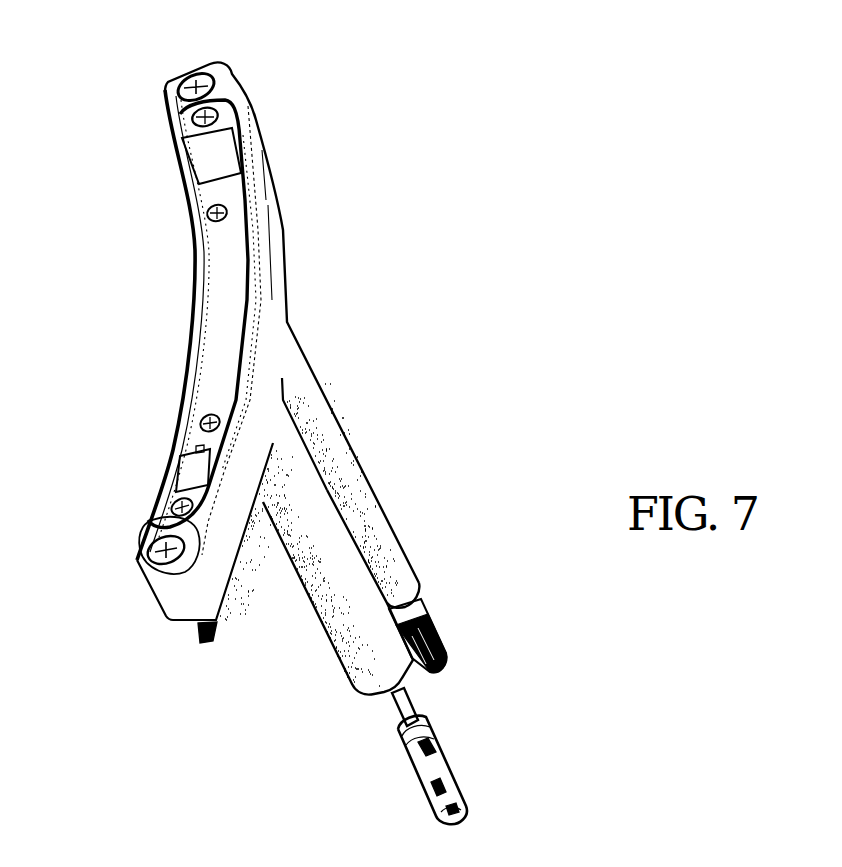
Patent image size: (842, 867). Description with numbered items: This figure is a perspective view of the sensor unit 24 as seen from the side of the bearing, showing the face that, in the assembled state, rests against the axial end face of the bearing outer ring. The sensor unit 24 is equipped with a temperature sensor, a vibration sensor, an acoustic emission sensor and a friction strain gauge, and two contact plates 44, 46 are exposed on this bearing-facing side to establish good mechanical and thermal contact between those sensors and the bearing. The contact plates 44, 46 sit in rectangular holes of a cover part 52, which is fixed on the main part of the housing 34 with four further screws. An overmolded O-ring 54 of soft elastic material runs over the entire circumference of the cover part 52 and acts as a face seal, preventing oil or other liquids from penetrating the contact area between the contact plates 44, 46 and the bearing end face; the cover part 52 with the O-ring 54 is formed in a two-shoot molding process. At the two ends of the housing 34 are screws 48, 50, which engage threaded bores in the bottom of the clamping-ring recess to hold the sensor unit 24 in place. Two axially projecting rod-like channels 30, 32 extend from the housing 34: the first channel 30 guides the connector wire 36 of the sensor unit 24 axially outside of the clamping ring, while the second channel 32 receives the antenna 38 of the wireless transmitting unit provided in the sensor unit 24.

The sensor unit 24 is at (270, 282).
The first channel 30 is at (313, 527).
The second channel 32 is at (332, 413).
The housing 34 is at (273, 343).
The connector wire 36 is at (395, 718).
The antenna 38 is at (433, 640).
The contact plate 44 is at (218, 162).
The contact plate 46 is at (167, 463).
The screw 48 is at (215, 72).
The screw 50 is at (140, 560).
The cover part 52 is at (218, 317).
The overmolded O-ring 54 is at (253, 210).